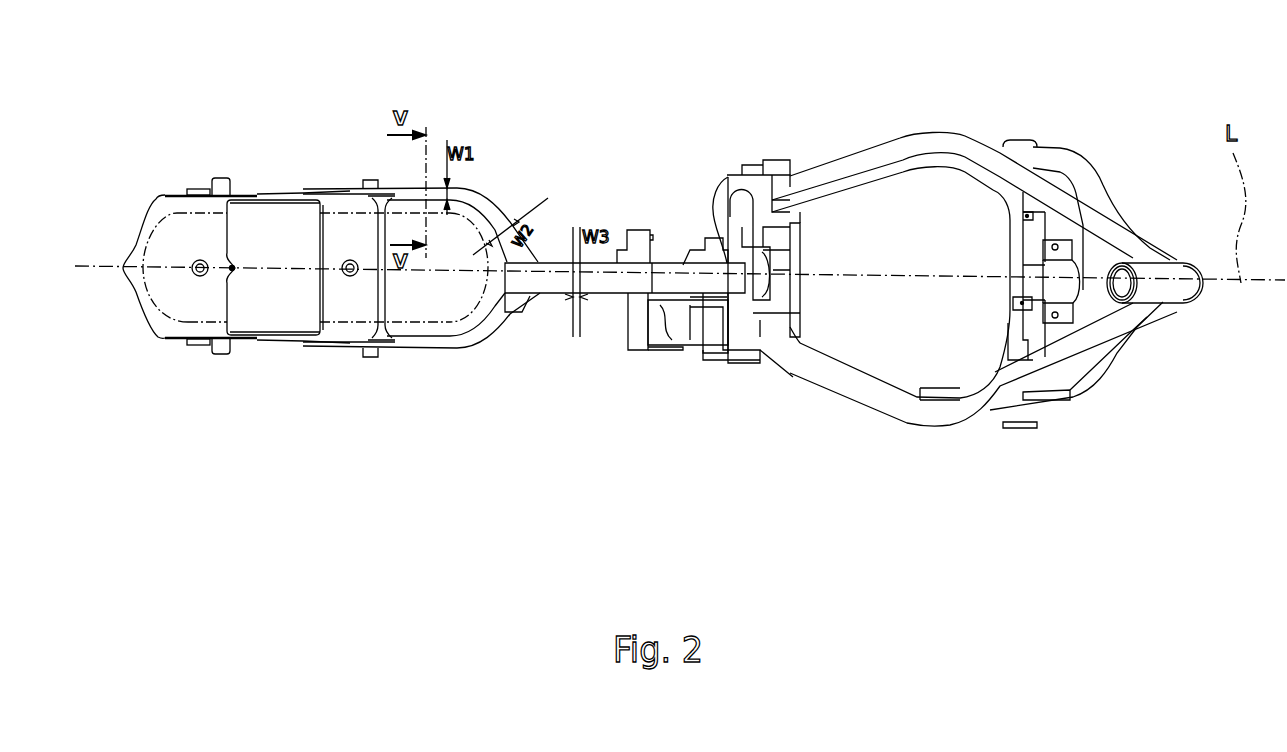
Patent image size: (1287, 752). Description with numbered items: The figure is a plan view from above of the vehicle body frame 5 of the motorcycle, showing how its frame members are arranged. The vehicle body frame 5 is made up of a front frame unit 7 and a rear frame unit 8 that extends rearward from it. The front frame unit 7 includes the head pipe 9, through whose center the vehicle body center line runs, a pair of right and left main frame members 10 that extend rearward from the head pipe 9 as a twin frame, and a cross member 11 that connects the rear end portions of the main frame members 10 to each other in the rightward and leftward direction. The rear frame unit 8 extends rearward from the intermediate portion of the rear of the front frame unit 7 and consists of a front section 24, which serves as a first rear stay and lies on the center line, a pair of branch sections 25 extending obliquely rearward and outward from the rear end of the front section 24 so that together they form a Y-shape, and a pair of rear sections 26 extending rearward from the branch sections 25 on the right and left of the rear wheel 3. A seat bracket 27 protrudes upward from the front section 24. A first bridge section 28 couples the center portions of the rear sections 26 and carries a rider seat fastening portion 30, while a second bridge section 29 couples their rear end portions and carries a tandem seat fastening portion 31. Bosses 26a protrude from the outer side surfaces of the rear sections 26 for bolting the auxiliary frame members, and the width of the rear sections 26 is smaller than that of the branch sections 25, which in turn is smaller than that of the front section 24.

The rear wheel 3 is at (448, 342).
The vehicle body frame 5 is at (974, 309).
The front frame unit 7 is at (955, 436).
The rear frame unit 8 is at (560, 352).
The head pipe 9 is at (1172, 300).
The main frame members 10 is at (930, 133).
The cross member 11 is at (735, 300).
The front section 24 is at (553, 262).
The branch sections 25 is at (503, 210).
The rear sections 26 is at (386, 196).
The bosses 26a is at (370, 180).
The seat bracket 27 is at (600, 262).
The first bridge section 28 is at (330, 200).
The second bridge section 29 is at (164, 195).
The rider seat fastening portion 30 is at (349, 278).
The tandem seat fastening portion 31 is at (192, 273).